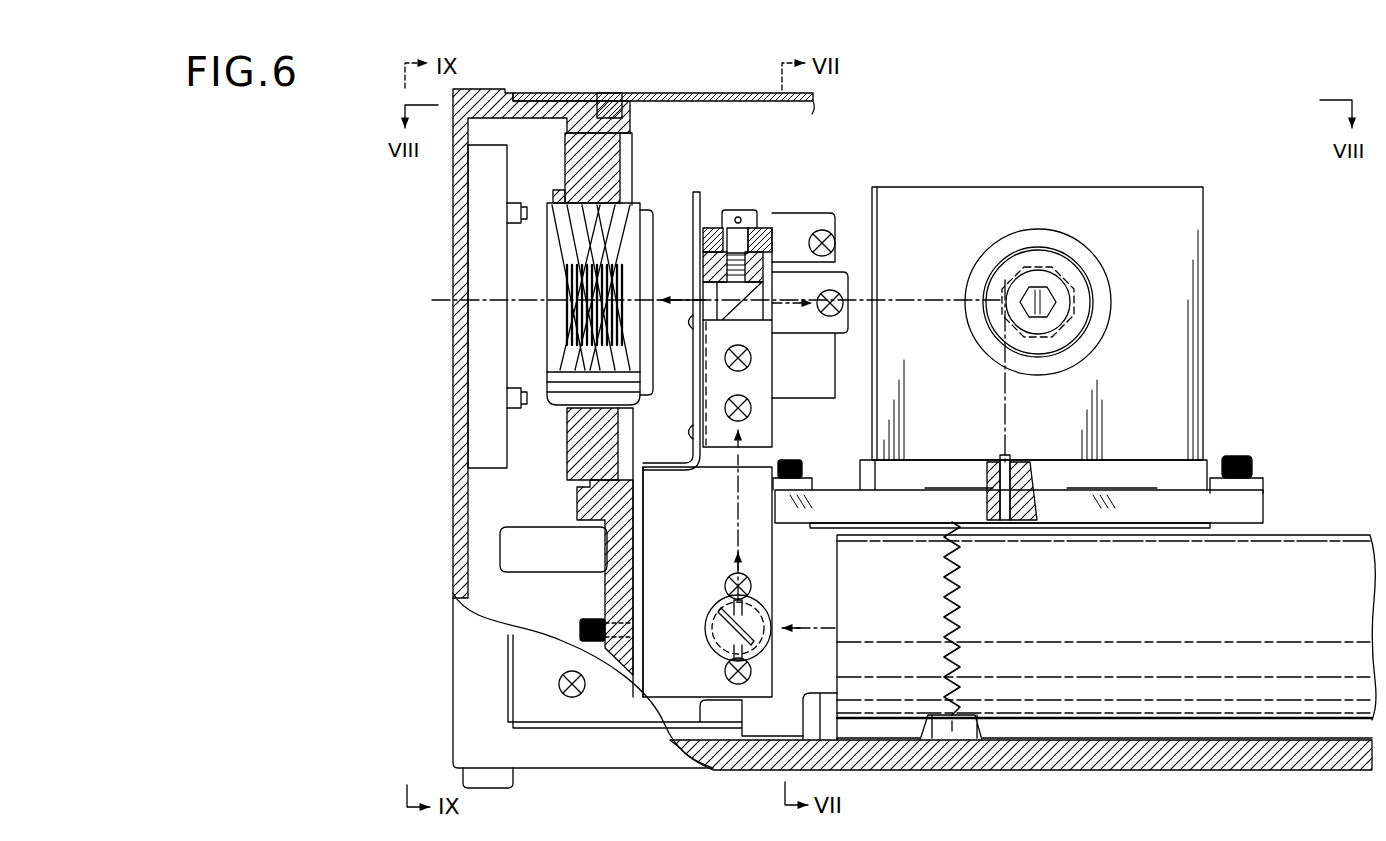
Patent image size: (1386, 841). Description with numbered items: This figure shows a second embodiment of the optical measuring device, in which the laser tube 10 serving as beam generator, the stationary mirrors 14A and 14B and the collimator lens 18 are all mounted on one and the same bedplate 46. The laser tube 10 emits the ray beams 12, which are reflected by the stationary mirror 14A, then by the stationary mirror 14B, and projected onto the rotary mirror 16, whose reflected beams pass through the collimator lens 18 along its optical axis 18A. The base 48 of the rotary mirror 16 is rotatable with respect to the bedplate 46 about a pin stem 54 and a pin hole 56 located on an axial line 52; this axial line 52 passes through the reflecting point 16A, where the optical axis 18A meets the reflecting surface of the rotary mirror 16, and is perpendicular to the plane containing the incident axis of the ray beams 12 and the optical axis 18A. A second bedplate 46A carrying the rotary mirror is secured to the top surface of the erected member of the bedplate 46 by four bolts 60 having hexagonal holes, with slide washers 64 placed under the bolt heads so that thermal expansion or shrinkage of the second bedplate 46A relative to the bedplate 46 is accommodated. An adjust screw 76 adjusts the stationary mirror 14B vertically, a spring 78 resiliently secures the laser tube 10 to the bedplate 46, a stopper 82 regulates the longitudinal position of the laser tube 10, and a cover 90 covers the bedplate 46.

The laser tube 10 is at (1107, 707).
The ray beams 12 is at (828, 627).
The stationary mirror 14A is at (768, 640).
The stationary mirror 14B is at (722, 291).
The rotary mirror 16 is at (1086, 297).
The reflecting point 16A is at (1005, 303).
The collimator lens 18 is at (590, 270).
The optical axis 18A is at (441, 300).
The bedplate 46 is at (580, 500).
The second bedplate 46A is at (1263, 503).
The base 48 is at (1148, 470).
The axial line 52 is at (1008, 406).
The pin stem 54 is at (1020, 463).
The pin hole 56 is at (990, 463).
The bolt with hexagonal hole 60 is at (793, 462).
The slide washer 64 is at (790, 485).
The adjust screw 76 is at (745, 210).
The spring 78 is at (962, 600).
The stopper 82 is at (815, 703).
The cover 90 is at (721, 93).